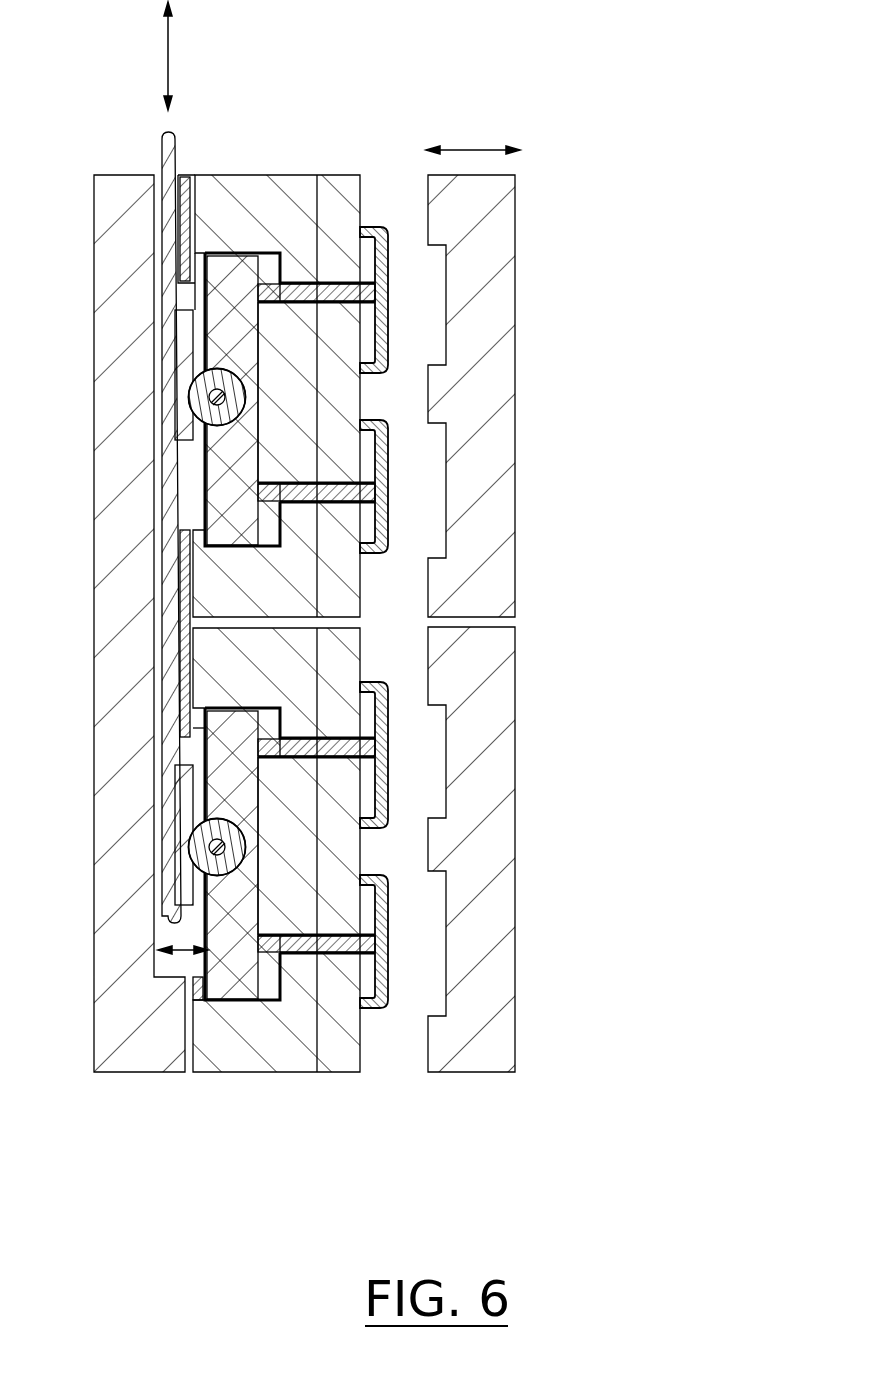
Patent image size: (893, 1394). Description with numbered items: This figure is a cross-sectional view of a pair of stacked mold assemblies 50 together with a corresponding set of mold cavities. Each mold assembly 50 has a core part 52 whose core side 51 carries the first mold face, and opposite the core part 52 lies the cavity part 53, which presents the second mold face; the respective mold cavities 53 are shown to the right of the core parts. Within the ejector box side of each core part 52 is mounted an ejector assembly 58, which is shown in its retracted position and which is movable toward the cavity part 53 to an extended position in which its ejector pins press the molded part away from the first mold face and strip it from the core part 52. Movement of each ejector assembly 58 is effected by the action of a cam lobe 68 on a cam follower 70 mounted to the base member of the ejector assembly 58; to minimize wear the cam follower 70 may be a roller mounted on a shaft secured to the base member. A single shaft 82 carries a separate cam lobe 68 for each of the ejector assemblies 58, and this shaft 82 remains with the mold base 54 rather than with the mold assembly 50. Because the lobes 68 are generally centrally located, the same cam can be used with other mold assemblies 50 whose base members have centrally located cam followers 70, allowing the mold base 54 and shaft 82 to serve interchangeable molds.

The mold assembly 50 is at (313, 647).
The core side 51 is at (347, 200).
The core part 52 is at (360, 158).
The cavity part 53 is at (500, 228).
The mold base 54 is at (118, 603).
The ejector assembly 58 is at (202, 458).
The cam lobe 68 is at (176, 333).
The cam follower 70 is at (186, 394).
The shaft 82 is at (162, 150).